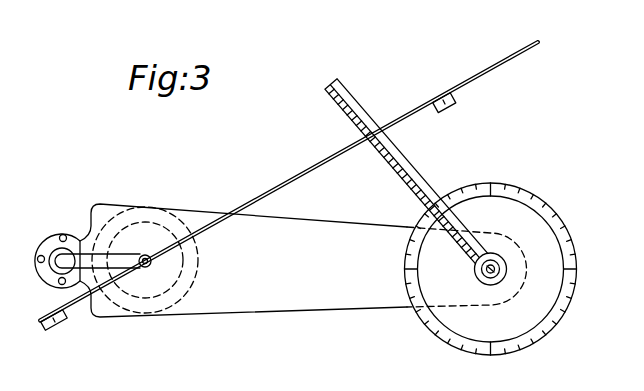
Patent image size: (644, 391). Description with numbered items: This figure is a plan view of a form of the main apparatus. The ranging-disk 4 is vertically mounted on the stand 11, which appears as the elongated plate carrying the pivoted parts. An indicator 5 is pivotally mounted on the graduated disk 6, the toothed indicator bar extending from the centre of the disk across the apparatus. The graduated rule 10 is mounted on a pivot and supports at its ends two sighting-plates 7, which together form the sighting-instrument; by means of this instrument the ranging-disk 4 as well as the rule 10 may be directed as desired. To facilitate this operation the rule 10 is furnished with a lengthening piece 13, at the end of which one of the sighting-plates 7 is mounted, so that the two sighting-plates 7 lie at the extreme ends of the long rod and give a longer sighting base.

The ranging-disk 4 is at (500, 62).
The indicator 5 is at (402, 177).
The graduated disk 6 is at (567, 230).
The sighting-plates 7 is at (456, 103).
The graduated rule 10 is at (400, 127).
The stand 11 is at (81, 237).
The lengthening piece 13 is at (79, 300).